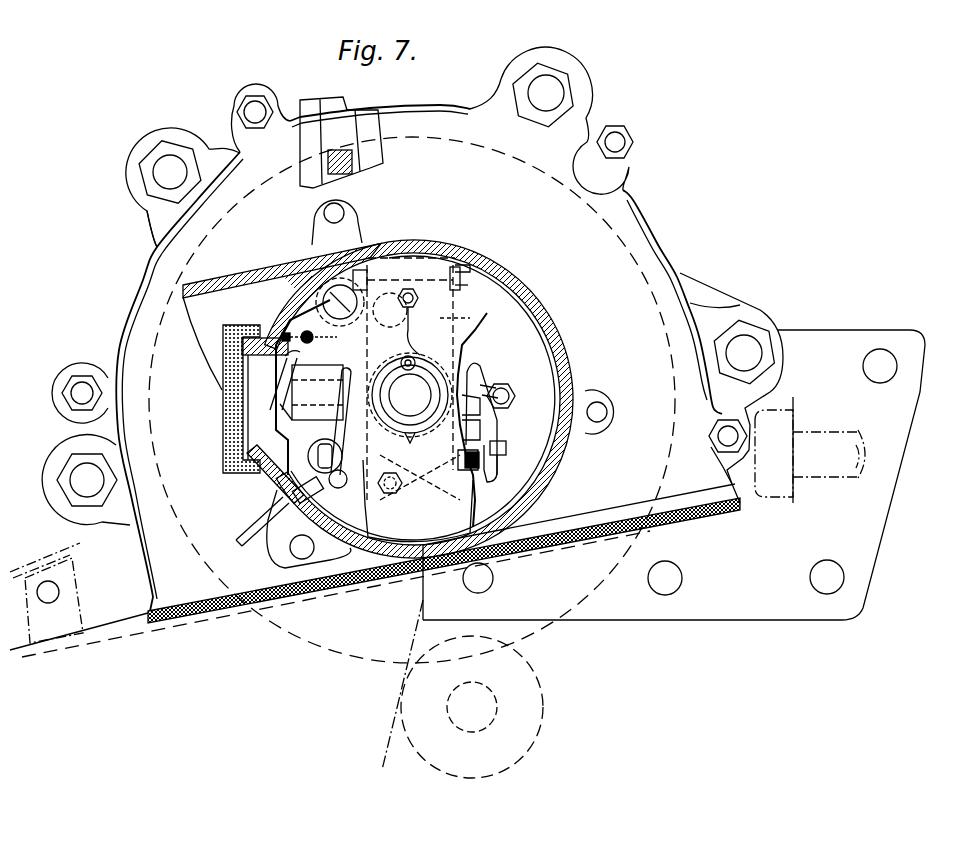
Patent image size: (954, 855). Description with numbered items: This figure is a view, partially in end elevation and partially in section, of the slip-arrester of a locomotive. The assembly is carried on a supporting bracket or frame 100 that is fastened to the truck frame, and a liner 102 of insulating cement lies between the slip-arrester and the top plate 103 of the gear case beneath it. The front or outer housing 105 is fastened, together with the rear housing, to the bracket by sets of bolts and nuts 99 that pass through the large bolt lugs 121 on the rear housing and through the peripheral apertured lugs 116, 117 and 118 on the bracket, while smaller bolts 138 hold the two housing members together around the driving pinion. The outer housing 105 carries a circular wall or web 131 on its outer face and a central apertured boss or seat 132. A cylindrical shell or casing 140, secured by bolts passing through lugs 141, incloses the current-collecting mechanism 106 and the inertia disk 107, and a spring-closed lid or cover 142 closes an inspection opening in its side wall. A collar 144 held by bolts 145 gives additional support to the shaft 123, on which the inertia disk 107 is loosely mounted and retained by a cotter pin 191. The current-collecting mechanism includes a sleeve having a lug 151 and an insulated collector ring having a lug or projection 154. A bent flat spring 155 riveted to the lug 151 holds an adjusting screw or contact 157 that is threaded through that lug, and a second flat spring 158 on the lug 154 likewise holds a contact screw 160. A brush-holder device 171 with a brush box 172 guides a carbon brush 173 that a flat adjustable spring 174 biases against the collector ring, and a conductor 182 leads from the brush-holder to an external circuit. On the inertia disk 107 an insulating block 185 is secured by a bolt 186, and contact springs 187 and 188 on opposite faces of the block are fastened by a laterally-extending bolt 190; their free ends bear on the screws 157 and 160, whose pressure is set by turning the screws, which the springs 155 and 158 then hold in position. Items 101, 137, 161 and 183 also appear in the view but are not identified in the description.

The bolts and nuts 99 is at (163, 147).
The supporting bracket 100 is at (857, 340).
The shaft axis 101 is at (393, 740).
The liner of insulating material 102 is at (215, 614).
The top plate 103 is at (121, 638).
The front or outer housing 105 is at (432, 145).
The current-collecting mechanism 106 is at (530, 349).
The inertia disk 107 is at (418, 498).
The apertured lug 116 is at (62, 525).
The apertured lug 117 is at (137, 150).
The apertured lug 118 is at (528, 58).
The large bolt lugs 121 is at (131, 192).
The shaft 123 is at (410, 398).
The circular wall or web 131 is at (536, 290).
The apertured boss or circular seat 132 is at (460, 250).
The nut 137 is at (68, 472).
The smaller bolts 138 is at (254, 100).
The cylindrical shell or casing 140 is at (525, 282).
The lugs 141 is at (350, 224).
The spring-closed lid or cover 142 is at (218, 403).
The collar 144 is at (488, 380).
The bolts 145 is at (515, 392).
The lug 151 is at (349, 486).
The lug or projection 154 is at (473, 470).
The bent flat spring 155 is at (340, 410).
The adjusting screw or contact 157 is at (312, 460).
The second flat spring 158 is at (476, 368).
The contact screw 160 is at (506, 446).
The lever 161 is at (316, 495).
The brush-holder device 171 is at (272, 441).
The brush box 172 is at (317, 388).
The carbon brush 173 is at (282, 414).
The flat adjustable spring 174 is at (271, 380).
The conductor 182 is at (252, 524).
The screw 183 is at (460, 300).
The insulating block 185 is at (410, 272).
The bolt 186 is at (409, 320).
The contact spring 187 is at (323, 331).
The contact spring 188 is at (458, 320).
The laterally-extending bolt 190 is at (462, 285).
The cotter pin 191 is at (401, 362).